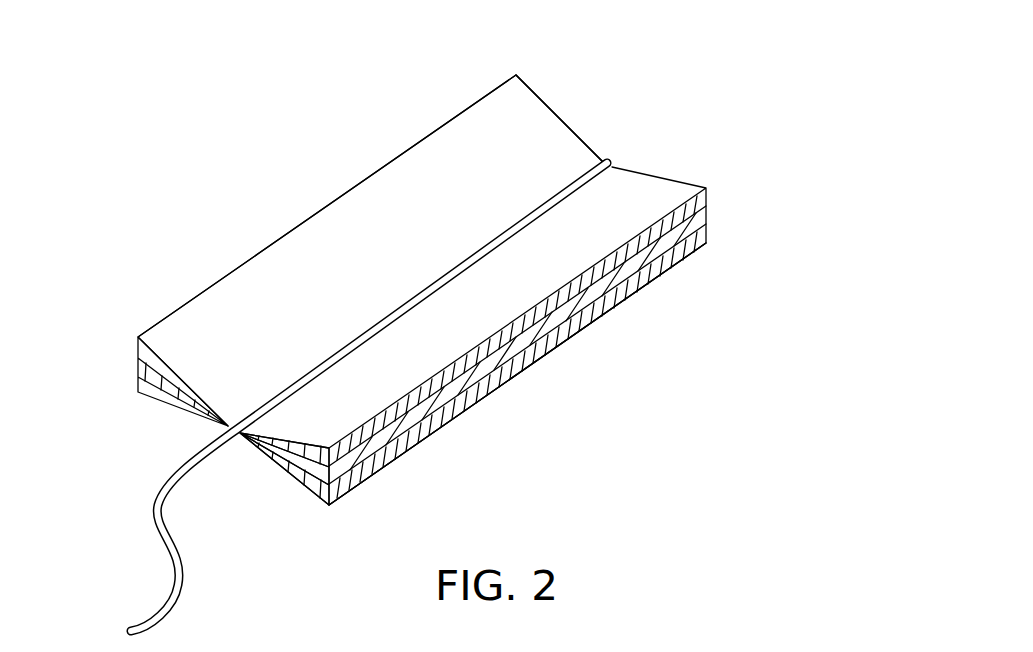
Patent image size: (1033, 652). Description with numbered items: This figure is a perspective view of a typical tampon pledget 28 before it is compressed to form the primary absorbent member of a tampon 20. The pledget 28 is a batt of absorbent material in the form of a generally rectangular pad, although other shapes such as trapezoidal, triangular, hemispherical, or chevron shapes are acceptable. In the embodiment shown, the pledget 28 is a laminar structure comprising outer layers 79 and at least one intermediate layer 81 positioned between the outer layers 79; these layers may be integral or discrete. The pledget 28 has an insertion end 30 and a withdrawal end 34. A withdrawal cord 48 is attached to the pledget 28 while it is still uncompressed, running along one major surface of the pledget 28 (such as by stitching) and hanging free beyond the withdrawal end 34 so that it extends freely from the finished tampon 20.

The tampon 20 is at (232, 177).
The tampon pledget 28 is at (542, 122).
The insertion end 30 is at (570, 120).
The withdrawal end 34 is at (288, 475).
The withdrawal cord 48 is at (160, 537).
The outer layers 79 is at (708, 225).
The intermediate layer 81 is at (625, 292).